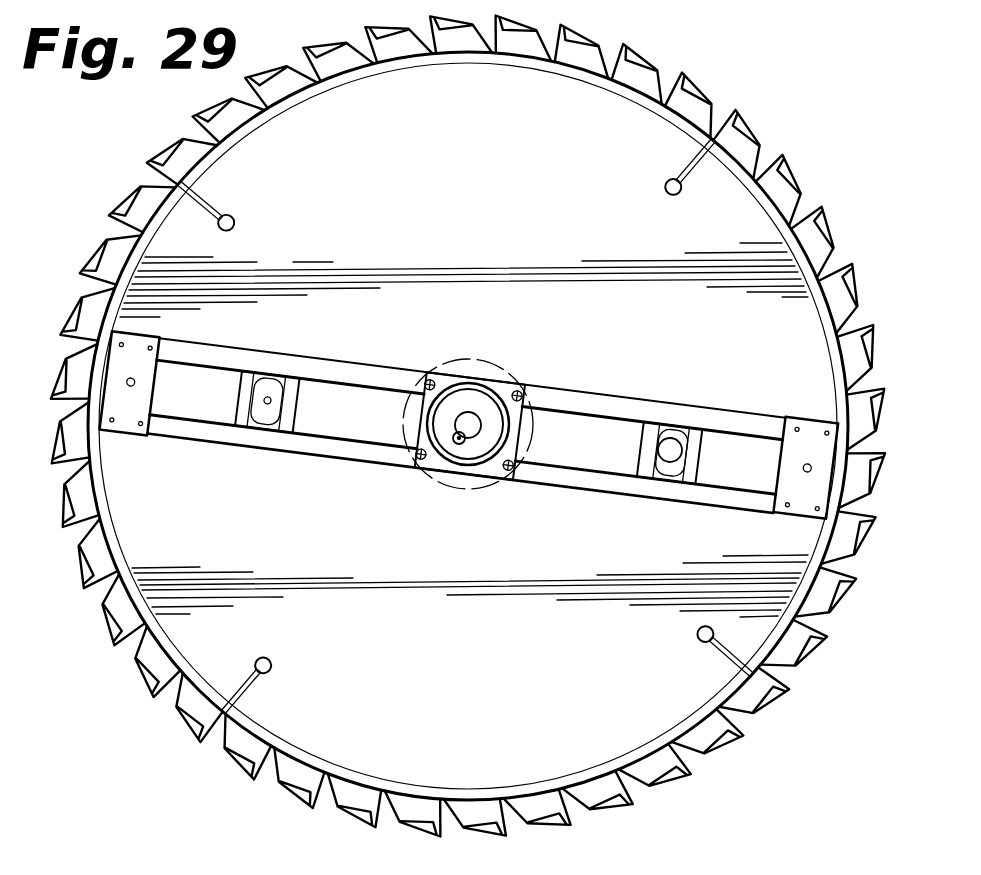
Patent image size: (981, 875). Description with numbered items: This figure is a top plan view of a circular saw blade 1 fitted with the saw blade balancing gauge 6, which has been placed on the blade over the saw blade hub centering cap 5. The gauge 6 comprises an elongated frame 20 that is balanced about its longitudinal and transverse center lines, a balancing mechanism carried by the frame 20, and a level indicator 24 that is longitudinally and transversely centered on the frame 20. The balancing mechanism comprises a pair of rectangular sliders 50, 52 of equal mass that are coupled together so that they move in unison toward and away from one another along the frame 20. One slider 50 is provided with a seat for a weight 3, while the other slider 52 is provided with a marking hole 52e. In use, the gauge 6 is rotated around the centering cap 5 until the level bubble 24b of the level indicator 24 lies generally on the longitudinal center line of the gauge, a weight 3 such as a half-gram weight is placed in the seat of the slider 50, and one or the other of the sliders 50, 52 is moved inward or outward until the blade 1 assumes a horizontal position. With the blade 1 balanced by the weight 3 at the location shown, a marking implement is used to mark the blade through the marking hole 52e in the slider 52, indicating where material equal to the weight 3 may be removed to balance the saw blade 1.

The saw blade 1 is at (712, 180).
The weight 3 is at (661, 428).
The saw blade hub centering cap 5 is at (670, 450).
The saw blade balancing gauge 6 is at (577, 380).
The frame 20 is at (336, 370).
The level indicator 24 is at (445, 378).
The level bubble 24b is at (463, 443).
The slider 50 is at (702, 468).
The slider 52 is at (298, 413).
The marking hole 52e is at (268, 396).